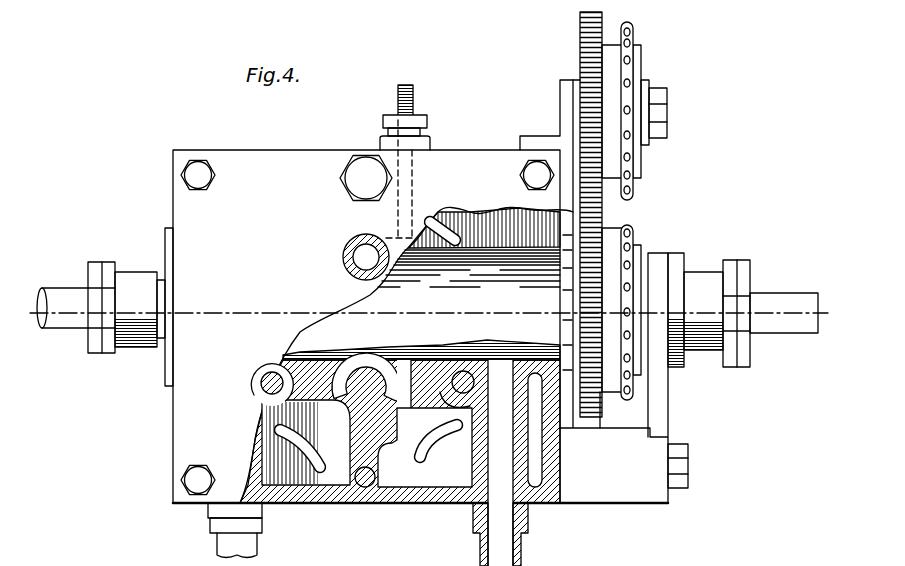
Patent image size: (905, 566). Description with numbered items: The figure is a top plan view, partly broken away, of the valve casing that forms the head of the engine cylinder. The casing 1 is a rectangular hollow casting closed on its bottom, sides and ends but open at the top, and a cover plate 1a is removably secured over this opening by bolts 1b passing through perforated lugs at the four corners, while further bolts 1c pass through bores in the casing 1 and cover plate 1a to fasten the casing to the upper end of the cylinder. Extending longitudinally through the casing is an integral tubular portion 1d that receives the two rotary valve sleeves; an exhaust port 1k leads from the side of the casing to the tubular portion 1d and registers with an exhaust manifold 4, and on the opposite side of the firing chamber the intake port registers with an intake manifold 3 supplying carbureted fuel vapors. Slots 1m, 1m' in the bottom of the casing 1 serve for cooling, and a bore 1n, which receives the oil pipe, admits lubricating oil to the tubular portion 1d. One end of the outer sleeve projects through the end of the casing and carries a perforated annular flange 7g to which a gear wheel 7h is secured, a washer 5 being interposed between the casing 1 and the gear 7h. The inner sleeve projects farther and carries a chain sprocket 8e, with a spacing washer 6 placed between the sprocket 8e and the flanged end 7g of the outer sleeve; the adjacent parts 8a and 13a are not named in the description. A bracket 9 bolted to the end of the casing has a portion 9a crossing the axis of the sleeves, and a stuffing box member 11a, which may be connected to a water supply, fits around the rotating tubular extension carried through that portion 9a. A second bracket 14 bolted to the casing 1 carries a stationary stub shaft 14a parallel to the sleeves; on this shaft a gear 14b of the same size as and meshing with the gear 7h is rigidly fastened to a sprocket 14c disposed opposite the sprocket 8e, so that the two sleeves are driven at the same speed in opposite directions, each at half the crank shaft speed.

The casing 1 is at (440, 500).
The cover plate 1a is at (263, 182).
The bolts 1b is at (188, 168).
The bolts 1c is at (353, 162).
The tubular portion 1d is at (545, 233).
The exhaust port 1k is at (508, 463).
The slots 1m is at (294, 477).
The curved port 1m' is at (422, 475).
The bore 1n is at (421, 230).
The intake manifold 3 is at (826, 313).
The exhaust manifold 4 is at (520, 536).
The washer 5 is at (600, 384).
The spacing washer 6 is at (366, 525).
The perforated annular flange 7g is at (607, 300).
The gear wheel 7h is at (592, 282).
The bolt ring 8a is at (633, 347).
The chain sprocket 8e is at (641, 350).
The bracket 9 is at (670, 497).
The bracket portion 9a is at (737, 303).
The stuffing box member 11a is at (743, 310).
The shaft end 13a is at (75, 297).
The bracket 14 is at (565, 97).
The stub shaft 14a is at (660, 110).
The gear 14b is at (581, 36).
The sprocket 14c is at (633, 60).